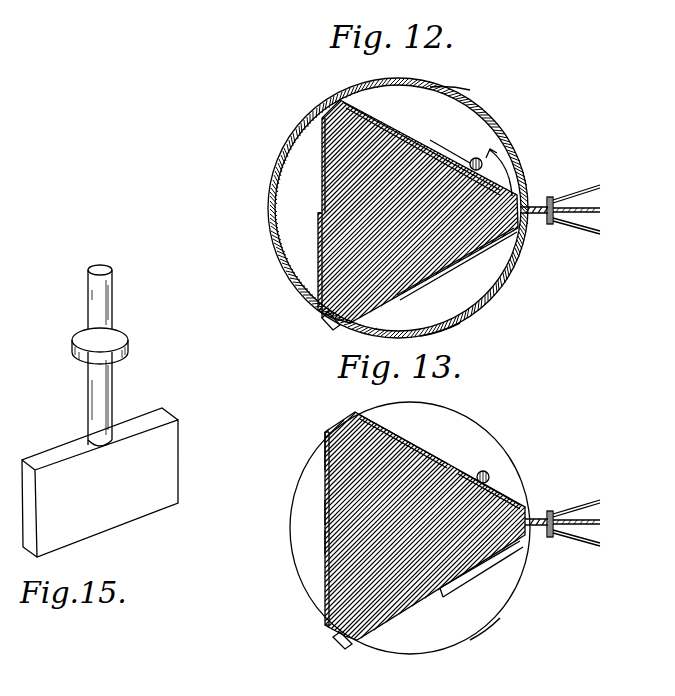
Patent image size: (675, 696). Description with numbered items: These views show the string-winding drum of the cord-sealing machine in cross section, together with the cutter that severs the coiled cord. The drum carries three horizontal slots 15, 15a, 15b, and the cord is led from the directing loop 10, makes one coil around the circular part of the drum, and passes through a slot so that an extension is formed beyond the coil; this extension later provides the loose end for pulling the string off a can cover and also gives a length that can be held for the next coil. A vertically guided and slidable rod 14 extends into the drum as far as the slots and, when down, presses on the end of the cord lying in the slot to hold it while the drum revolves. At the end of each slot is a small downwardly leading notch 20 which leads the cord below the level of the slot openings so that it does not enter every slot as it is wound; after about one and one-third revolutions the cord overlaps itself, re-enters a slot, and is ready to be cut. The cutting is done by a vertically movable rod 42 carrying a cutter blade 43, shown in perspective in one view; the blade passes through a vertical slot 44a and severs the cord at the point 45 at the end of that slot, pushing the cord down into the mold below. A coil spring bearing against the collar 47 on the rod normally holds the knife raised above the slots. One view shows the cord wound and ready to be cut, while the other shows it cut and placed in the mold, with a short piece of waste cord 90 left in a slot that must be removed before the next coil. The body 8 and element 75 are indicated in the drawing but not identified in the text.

In FIG. 12, the triangular body 8 is at (418, 211).
In FIG. 13, the triangular body 8 is at (425, 526).
In FIG. 12, the directing loop 10 is at (550, 225).
In FIG. 13, the directing loop 10 is at (552, 515).
In FIG. 12, the vertically guided and slidable rod 14 is at (483, 165).
In FIG. 13, the vertically guided and slidable rod 14 is at (489, 478).
In FIG. 12, the slot 15 is at (278, 192).
In FIG. 12, the slot 15a is at (460, 96).
In FIG. 13, the slot 15a is at (486, 430).
In FIG. 12, the slot 15b is at (446, 326).
In FIG. 13, the slot 15b is at (488, 600).
In FIG. 12, the downwardly leading notch 20 is at (330, 322).
In FIG. 13, the downwardly leading notch 20 is at (342, 640).
In FIG. 15, the vertically movable rod 42 is at (112, 388).
In FIG. 15, the cutter blade 43 is at (172, 500).
In FIG. 12, the vertical slot 44a is at (398, 128).
In FIG. 13, the vertical slot 44a is at (420, 452).
In FIG. 12, the cutting point 45 is at (442, 146).
In FIG. 13, the cutting point 45 is at (325, 540).
In FIG. 15, the collar 47 is at (128, 344).
In FIG. 13, the side member 75 is at (325, 512).
In FIG. 13, the short piece of waste cord 90 is at (325, 488).